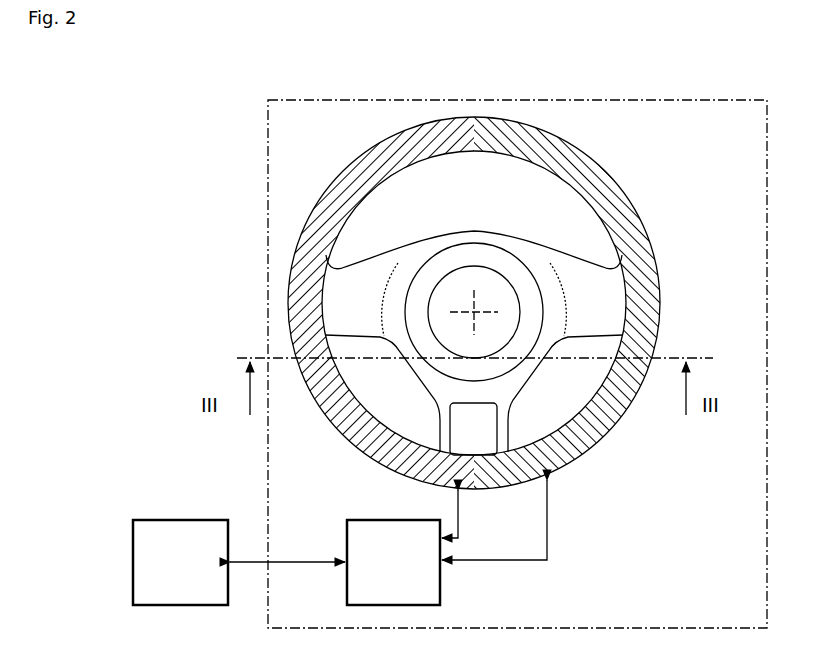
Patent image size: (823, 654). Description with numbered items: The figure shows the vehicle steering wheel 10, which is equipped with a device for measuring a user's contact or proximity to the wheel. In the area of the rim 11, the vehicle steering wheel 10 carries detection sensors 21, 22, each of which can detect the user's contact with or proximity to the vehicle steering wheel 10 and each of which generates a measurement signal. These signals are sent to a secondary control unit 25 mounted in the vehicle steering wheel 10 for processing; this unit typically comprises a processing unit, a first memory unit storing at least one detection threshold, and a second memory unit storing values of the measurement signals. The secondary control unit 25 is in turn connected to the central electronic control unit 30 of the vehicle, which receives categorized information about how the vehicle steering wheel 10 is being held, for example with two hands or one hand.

The vehicle steering wheel 10 is at (437, 358).
The rim 11 is at (472, 303).
The detection sensor 21 is at (424, 303).
The detection sensor 22 is at (516, 303).
The secondary control unit 25 is at (372, 535).
The central electronic control unit 30 is at (145, 540).